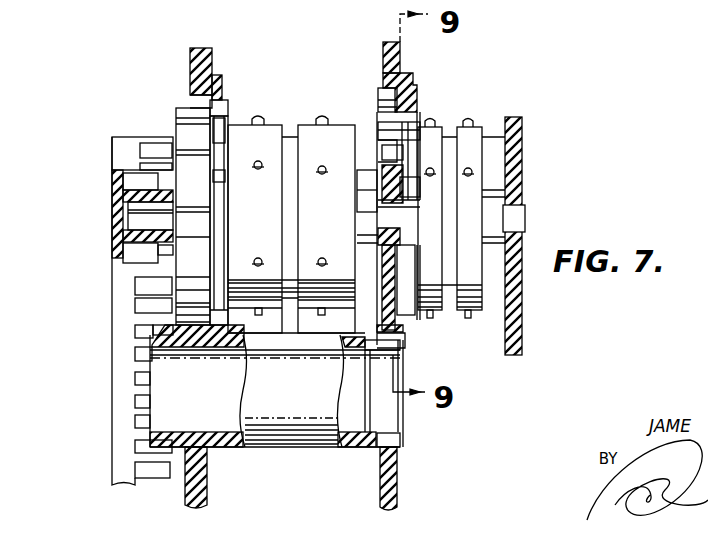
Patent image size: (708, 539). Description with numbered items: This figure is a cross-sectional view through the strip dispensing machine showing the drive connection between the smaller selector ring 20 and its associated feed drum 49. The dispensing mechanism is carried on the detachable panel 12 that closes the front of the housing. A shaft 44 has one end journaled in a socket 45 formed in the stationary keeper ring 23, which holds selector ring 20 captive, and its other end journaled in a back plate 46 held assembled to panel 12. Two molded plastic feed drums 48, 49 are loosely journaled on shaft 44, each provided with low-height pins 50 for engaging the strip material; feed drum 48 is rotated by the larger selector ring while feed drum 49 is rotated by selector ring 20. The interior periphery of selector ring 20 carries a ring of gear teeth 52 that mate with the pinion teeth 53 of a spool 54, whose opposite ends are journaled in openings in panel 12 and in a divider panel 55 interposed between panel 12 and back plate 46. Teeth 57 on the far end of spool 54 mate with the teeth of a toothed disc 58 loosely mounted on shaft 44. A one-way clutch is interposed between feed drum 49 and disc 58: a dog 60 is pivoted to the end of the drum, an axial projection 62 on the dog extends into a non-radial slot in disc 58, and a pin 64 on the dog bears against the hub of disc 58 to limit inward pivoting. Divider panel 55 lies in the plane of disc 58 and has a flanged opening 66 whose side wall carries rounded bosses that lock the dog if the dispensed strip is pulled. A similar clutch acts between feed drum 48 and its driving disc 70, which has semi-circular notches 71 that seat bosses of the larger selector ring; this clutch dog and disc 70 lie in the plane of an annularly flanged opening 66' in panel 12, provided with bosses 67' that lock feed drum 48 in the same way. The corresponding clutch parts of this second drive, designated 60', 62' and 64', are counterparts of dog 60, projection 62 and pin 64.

The detachable panel 12 is at (188, 65).
The selector ring 20 is at (110, 398).
The keeper ring 23 is at (112, 202).
The shaft 44 is at (522, 210).
The socket 45 is at (132, 220).
The back plate 46 is at (522, 155).
The feed drum 48 is at (312, 118).
The feed drum 49 is at (482, 126).
The low-height pins 50 is at (263, 120).
The gear teeth 52 is at (148, 470).
The pinion teeth 53 is at (133, 447).
The spool 54 is at (276, 391).
The divider panel 55 is at (395, 488).
The teeth 57 is at (400, 440).
The toothed disc 58 is at (378, 108).
The dog 60 is at (424, 132).
The spacer 60' is at (246, 108).
The axial projection 62 is at (366, 149).
The center line 62' is at (160, 127).
The pin 64 is at (420, 257).
The sleeve 64' is at (242, 185).
The flanged opening 66 is at (392, 350).
The annularly flanged opening 66' is at (230, 83).
The bosses 67' is at (233, 229).
The driving disc 70 is at (178, 118).
The semi-circular notches 71 is at (188, 268).